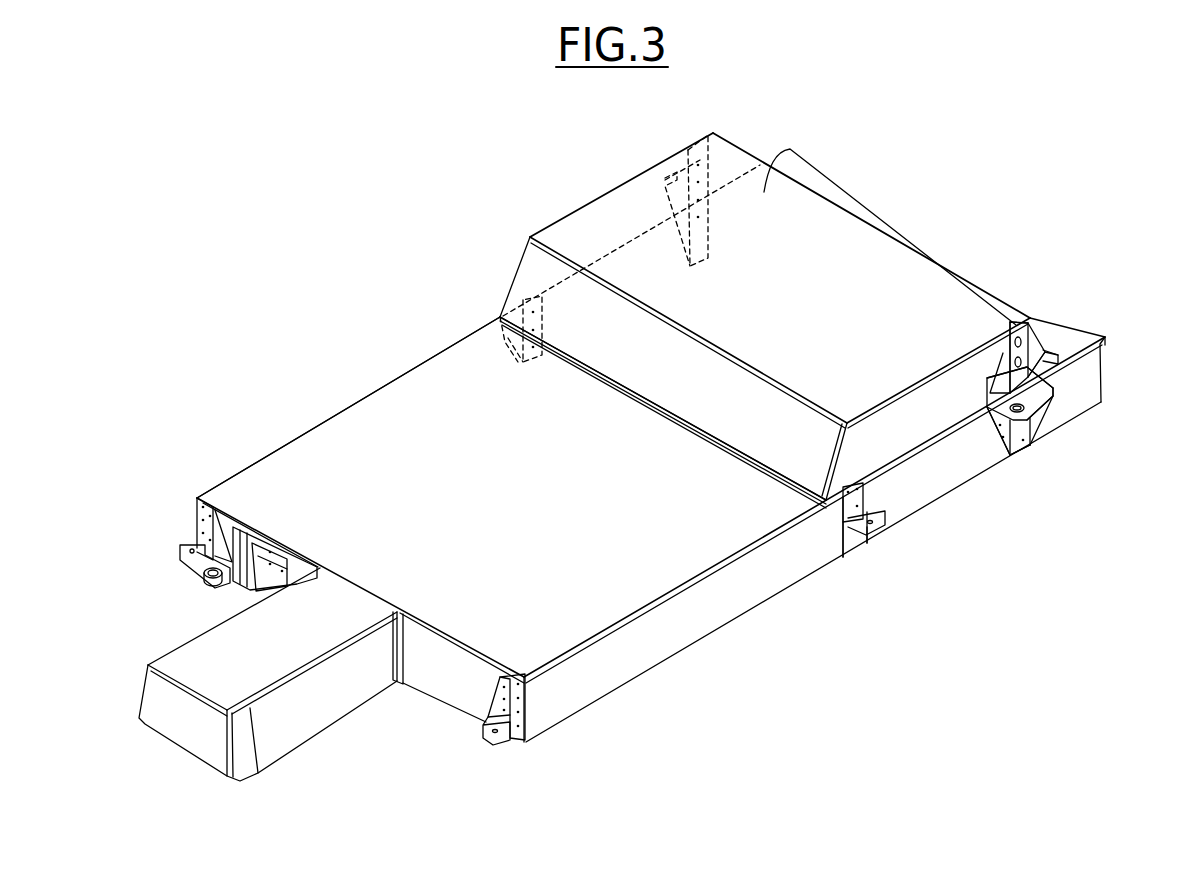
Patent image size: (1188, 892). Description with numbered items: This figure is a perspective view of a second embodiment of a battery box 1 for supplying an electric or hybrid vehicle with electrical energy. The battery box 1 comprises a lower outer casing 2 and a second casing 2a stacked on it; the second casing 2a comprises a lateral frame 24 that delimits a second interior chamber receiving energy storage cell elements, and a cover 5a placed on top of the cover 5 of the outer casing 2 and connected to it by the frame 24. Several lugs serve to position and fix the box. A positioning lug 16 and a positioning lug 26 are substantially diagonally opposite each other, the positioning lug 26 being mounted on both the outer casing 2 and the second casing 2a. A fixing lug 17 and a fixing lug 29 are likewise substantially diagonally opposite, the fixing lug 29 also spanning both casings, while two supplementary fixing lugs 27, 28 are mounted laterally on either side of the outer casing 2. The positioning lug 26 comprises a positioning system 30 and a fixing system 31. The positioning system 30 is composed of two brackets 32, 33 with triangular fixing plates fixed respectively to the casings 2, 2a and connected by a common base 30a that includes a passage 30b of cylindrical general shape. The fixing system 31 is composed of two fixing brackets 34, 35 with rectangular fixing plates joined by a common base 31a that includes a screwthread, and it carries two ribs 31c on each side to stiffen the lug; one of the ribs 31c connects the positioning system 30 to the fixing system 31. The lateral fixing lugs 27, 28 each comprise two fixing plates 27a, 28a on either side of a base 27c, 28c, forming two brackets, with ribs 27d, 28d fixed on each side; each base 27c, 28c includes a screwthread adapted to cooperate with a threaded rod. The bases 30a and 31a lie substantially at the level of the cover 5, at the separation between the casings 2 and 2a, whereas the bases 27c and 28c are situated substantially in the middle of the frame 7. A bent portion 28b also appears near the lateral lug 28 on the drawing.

The battery box 1 is at (364, 243).
The outer casing 2 is at (316, 448).
The second casing 2a is at (630, 206).
The cover 5 is at (415, 410).
The cover 5a is at (766, 190).
The frame 7 is at (663, 638).
The positioning lug 16 is at (163, 546).
The fixing lug 17 is at (499, 766).
The lateral frame 24 is at (528, 267).
The positioning lug 26 is at (1076, 376).
The fixing lug 27 is at (855, 559).
The fixing plate 27a is at (842, 512).
The base 27c is at (884, 503).
The rib 27d is at (851, 535).
The fixing lug 28 is at (487, 321).
The fixing plate 28a is at (505, 312).
The bent portion 28b is at (548, 342).
The base 28c is at (507, 315).
The rib 28d is at (503, 338).
The fixing lug 29 is at (688, 150).
The positioning system 30 is at (980, 418).
The base 30a is at (1000, 398).
The passage 30b is at (1038, 425).
The fixing system 31 is at (1046, 328).
The base 31a is at (1058, 373).
The rib 31c is at (1040, 433).
The bracket 32 is at (1003, 458).
The bracket 33 is at (1002, 358).
The fixing bracket 34 is at (1013, 463).
The fixing bracket 35 is at (1033, 325).